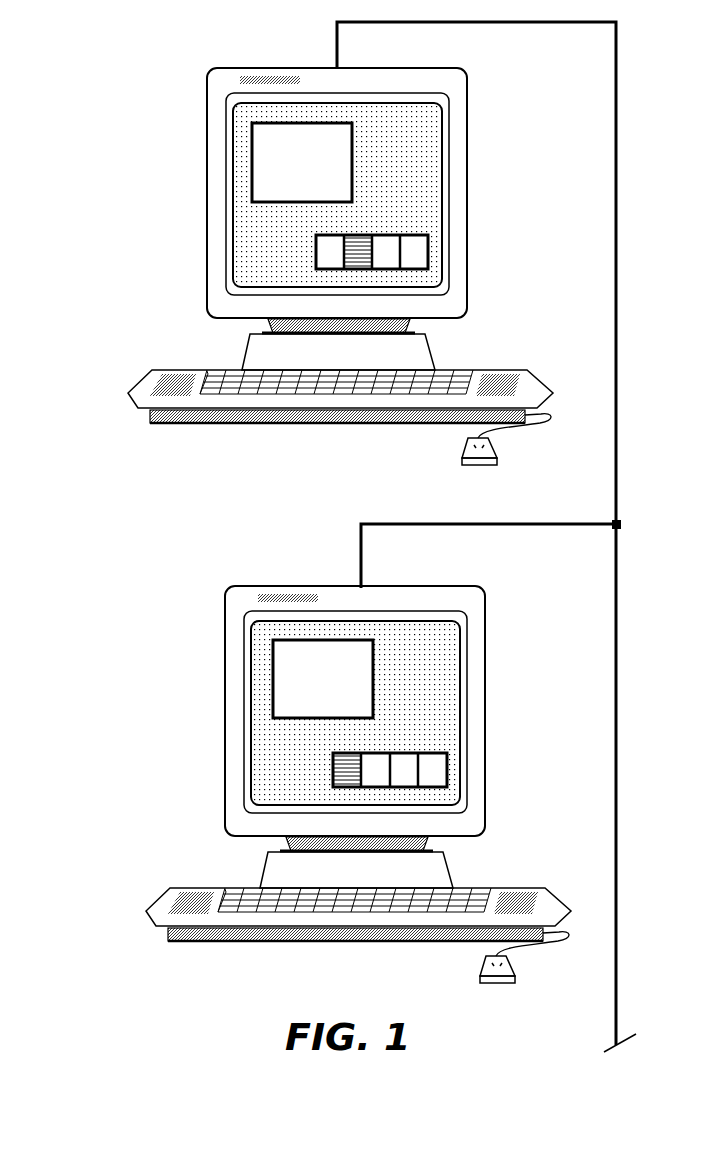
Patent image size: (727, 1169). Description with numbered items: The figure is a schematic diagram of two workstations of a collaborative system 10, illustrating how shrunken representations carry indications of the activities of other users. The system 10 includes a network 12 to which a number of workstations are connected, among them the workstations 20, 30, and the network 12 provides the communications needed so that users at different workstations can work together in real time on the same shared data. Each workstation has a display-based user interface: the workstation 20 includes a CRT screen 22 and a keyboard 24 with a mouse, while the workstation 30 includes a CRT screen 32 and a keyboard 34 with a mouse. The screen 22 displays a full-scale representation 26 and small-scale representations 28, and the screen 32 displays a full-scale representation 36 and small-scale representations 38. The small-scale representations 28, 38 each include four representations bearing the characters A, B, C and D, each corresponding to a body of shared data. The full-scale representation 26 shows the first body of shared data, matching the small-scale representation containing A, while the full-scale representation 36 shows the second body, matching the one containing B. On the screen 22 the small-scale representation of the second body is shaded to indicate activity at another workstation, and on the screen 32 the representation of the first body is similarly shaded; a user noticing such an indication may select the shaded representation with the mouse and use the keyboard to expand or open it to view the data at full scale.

The system 10 is at (118, 150).
The network 12 is at (617, 273).
The workstation 20 is at (237, 68).
The CRT screen 22 is at (263, 262).
The keyboard 24 is at (144, 378).
The full-scale representation 26 is at (252, 168).
The small-scale representations 28 is at (428, 253).
The workstation 30 is at (397, 760).
The CRT screen 32 is at (322, 715).
The keyboard 34 is at (351, 890).
The full-scale representation 36 is at (277, 677).
The small-scale representations 38 is at (433, 760).